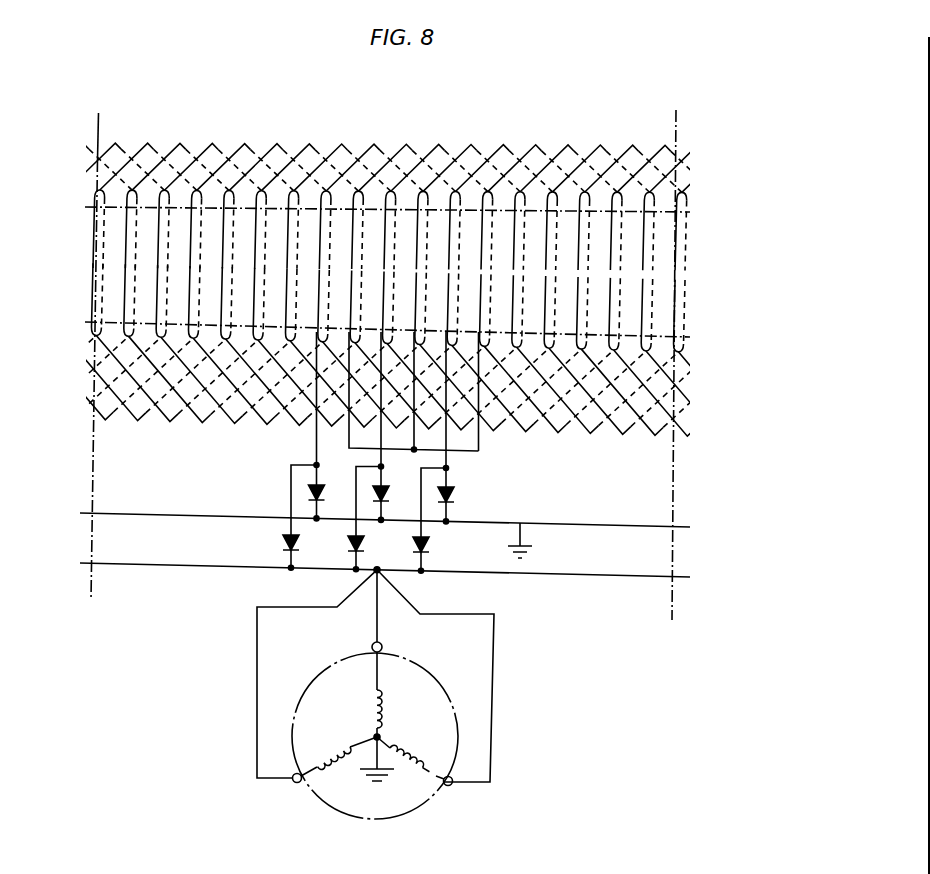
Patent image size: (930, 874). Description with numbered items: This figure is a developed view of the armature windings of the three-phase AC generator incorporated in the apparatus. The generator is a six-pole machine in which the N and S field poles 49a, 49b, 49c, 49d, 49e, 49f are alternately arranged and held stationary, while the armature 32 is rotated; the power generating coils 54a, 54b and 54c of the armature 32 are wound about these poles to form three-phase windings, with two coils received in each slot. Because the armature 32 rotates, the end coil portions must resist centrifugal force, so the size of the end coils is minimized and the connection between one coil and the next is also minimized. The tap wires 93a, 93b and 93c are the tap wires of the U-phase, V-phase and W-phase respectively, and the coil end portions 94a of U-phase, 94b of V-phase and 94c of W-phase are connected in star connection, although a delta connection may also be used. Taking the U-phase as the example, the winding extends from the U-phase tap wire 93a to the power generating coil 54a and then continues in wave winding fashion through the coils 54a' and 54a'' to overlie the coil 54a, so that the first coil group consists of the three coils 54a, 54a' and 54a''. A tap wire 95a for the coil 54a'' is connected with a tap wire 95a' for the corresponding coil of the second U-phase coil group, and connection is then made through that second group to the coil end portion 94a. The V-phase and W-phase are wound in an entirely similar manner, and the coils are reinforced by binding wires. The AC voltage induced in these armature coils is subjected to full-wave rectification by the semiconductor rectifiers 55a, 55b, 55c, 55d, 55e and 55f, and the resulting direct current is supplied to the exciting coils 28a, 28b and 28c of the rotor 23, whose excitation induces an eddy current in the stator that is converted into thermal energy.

The armature 32 is at (450, 101).
The field pole 49a is at (382, 212).
The field pole 49b is at (481, 212).
The field pole 49c is at (580, 212).
The field pole 49d is at (679, 207).
The field pole 49e is at (188, 212).
The field pole 49f is at (284, 207).
The power generating coil 54a is at (375, 140).
The power generating coil 54a' is at (371, 138).
The power generating coil 54a'' is at (650, 138).
The power generating coil 54b is at (493, 158).
The power generating coil 54c is at (460, 168).
The tap wire 95a is at (657, 393).
The tap wire 95a' is at (176, 394).
The U-phase tap wire 93a is at (348, 441).
The V-phase tap wire 93b is at (440, 481).
The W-phase tap wire 93c is at (447, 459).
The U-phase coil end portion 94a is at (416, 441).
The V-phase coil end portion 94b is at (480, 433).
The W-phase coil end portion 94c is at (313, 464).
The semiconductor rectifier 55a is at (283, 544).
The semiconductor rectifier 55b is at (348, 544).
The semiconductor rectifier 55c is at (428, 547).
The semiconductor rectifier 55d is at (307, 493).
The semiconductor rectifier 55e is at (383, 504).
The semiconductor rectifier 55f is at (450, 506).
The exciting coil 28a is at (384, 695).
The exciting coil 28b is at (406, 770).
The exciting coil 28c is at (332, 752).
The rotor 23 is at (375, 694).